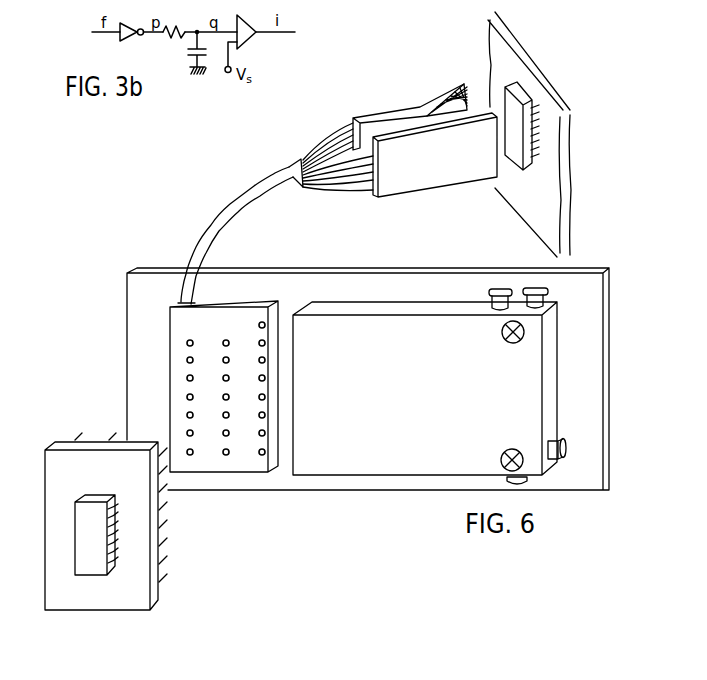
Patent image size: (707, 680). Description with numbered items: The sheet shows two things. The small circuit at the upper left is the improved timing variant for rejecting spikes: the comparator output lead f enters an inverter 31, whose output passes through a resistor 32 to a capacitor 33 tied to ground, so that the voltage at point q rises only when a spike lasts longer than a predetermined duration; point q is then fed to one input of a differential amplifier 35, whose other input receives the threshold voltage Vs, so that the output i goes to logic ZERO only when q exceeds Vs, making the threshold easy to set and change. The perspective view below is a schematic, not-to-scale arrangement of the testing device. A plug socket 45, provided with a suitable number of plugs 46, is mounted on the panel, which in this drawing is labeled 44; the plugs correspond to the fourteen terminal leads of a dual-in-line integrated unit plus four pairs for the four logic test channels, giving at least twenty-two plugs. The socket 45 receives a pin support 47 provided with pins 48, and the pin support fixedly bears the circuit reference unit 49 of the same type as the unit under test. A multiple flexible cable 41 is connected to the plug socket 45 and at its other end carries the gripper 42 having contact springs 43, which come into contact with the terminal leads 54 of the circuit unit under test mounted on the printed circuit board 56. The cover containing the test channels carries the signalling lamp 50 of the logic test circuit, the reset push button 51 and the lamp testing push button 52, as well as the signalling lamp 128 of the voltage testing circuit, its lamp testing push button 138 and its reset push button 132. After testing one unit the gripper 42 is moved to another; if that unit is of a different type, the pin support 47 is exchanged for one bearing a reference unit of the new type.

In FIG. 3B, the inverter 31 is at (125, 39).
In FIG. 3B, the resistor 32 is at (174, 22).
In FIG. 3B, the capacitor 33 is at (192, 58).
In FIG. 3B, the differential amplifier 35 is at (260, 41).
In FIG. 6, the multiple flexible cable 41 is at (216, 213).
In FIG. 6, the gripper 42 is at (363, 116).
In FIG. 6, the contact springs 43 is at (466, 108).
In FIG. 6, the circuit board 44 is at (362, 468).
In FIG. 6, the plug socket 45 is at (236, 306).
In FIG. 6, the plugs 46 is at (219, 358).
In FIG. 6, the pin support 47 is at (150, 600).
In FIG. 6, the pins 48 is at (169, 542).
In FIG. 6, the circuit reference unit 49 is at (98, 568).
In FIG. 6, the signalling lamp 50 is at (503, 338).
In FIG. 6, the reset push button 51 is at (542, 290).
In FIG. 6, the lamp testing push button 52 is at (493, 290).
In FIG. 6, the terminal leads 54 is at (537, 147).
In FIG. 6, the printed circuit board 56 is at (522, 71).
In FIG. 6, the signalling lamp 128 is at (500, 452).
In FIG. 6, the reset push button 132 is at (568, 433).
In FIG. 6, the lamp testing push button 138 is at (537, 482).